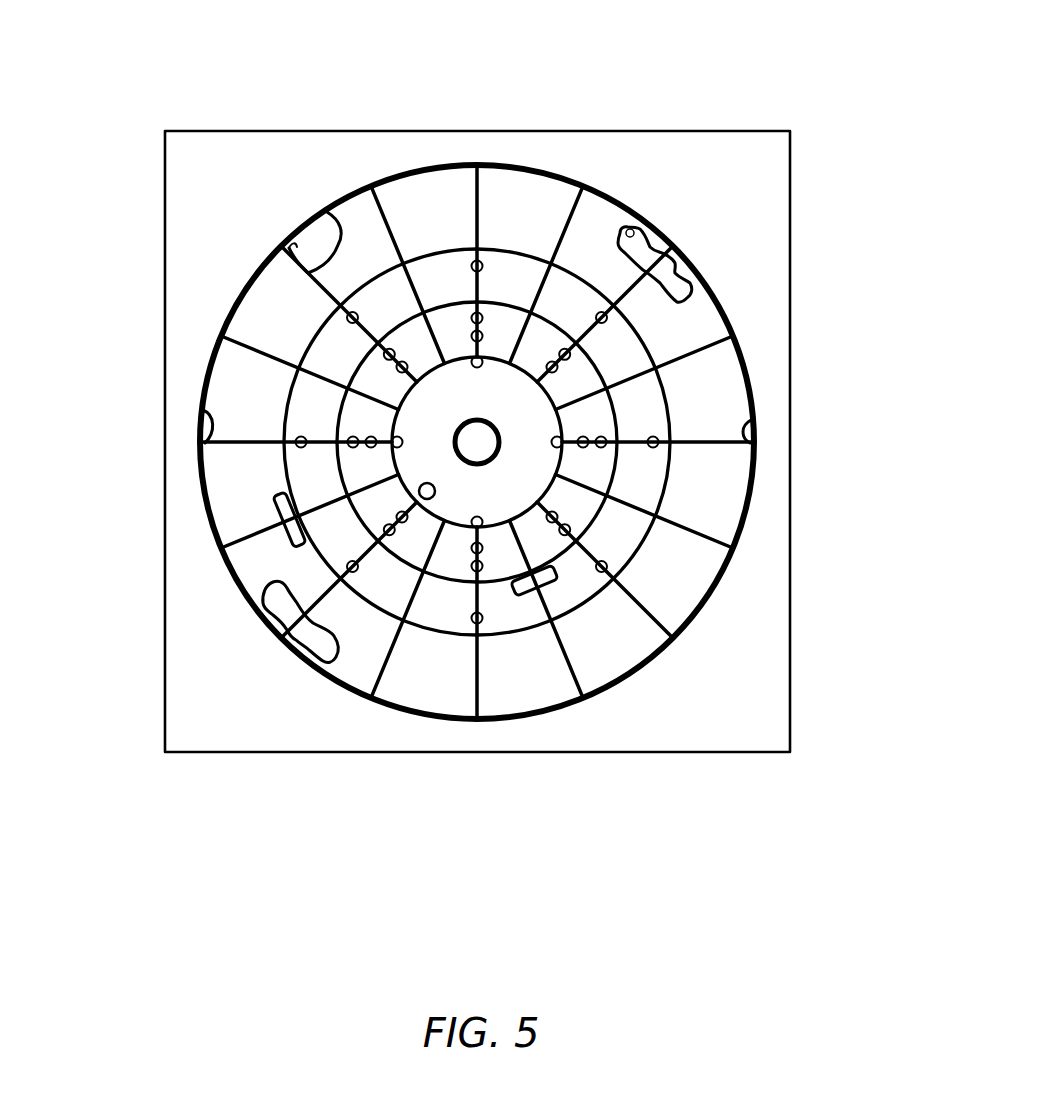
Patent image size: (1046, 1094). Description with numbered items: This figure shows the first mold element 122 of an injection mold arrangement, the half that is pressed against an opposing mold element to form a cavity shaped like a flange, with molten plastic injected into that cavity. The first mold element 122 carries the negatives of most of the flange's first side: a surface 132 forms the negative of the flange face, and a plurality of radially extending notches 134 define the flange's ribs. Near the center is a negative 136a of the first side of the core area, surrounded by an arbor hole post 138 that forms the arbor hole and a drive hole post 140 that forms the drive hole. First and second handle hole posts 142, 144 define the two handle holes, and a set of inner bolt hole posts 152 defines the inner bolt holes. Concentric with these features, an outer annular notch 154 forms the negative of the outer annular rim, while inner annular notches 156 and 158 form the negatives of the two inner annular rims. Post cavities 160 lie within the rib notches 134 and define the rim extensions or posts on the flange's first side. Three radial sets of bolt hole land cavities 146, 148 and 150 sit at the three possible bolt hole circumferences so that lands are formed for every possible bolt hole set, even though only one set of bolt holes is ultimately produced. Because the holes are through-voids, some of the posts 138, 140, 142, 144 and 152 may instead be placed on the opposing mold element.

The first mold element 122 is at (790, 178).
The surface 132 is at (588, 235).
The radially extending notches 134 is at (313, 273).
The negative of the first side of the core area 136a is at (527, 449).
The arbor hole post 138 is at (479, 452).
The drive hole post 140 is at (420, 484).
The first handle hole post 142 is at (330, 664).
The second handle hole post 144 is at (622, 220).
The bolt hole land cavities 146 is at (483, 618).
The bolt hole land cavities 148 is at (558, 537).
The bolt hole land cavities 150 is at (297, 548).
The inner bolt hole posts 152 is at (473, 362).
The outer annular notch 154 is at (645, 365).
The inner annular notch 156 is at (645, 345).
The inner annular notch 158 is at (597, 513).
The post cavities 160 is at (297, 237).